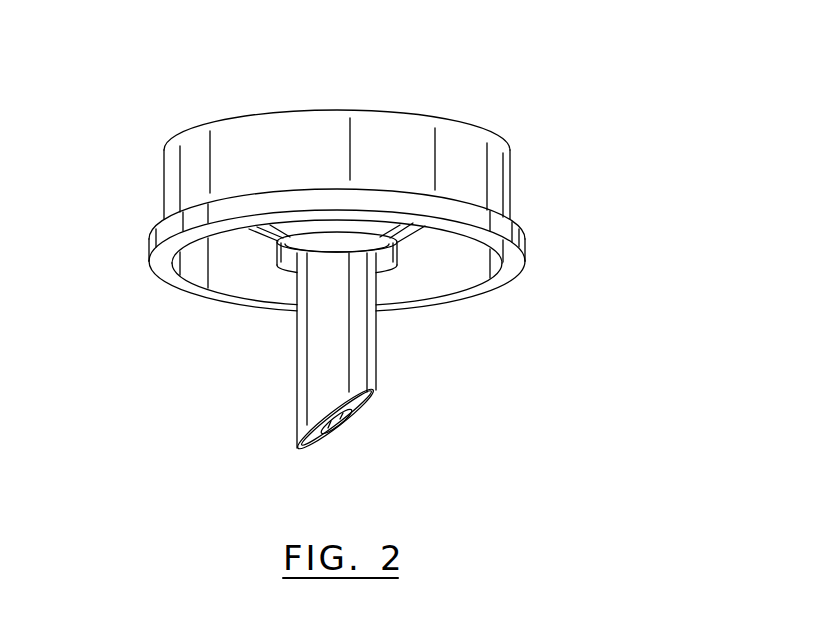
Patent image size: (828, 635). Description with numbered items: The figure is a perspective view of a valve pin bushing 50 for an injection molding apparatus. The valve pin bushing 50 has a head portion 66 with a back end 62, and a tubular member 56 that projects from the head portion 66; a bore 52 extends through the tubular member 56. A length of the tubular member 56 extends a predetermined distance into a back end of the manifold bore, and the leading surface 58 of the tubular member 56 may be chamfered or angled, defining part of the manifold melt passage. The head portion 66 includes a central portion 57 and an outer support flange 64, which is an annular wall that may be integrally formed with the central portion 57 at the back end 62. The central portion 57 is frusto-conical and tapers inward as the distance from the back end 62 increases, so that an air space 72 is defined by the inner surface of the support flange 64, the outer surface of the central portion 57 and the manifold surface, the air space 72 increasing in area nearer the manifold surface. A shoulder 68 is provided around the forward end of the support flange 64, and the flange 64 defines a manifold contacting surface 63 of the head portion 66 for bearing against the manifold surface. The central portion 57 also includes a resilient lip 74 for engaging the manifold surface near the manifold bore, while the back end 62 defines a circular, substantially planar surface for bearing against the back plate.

The valve pin bushing 50 is at (470, 104).
The bore 52 is at (345, 435).
The tubular member 56 is at (373, 357).
The central portion 57 is at (267, 236).
The leading surface 58 is at (318, 446).
The back end 62 is at (323, 123).
The manifold contacting surface 63 is at (512, 268).
The outer support flange 64 is at (512, 182).
The head portion 66 is at (617, 130).
The shoulder 68 is at (147, 250).
The air space 72 is at (452, 280).
The resilient lip 74 is at (285, 280).